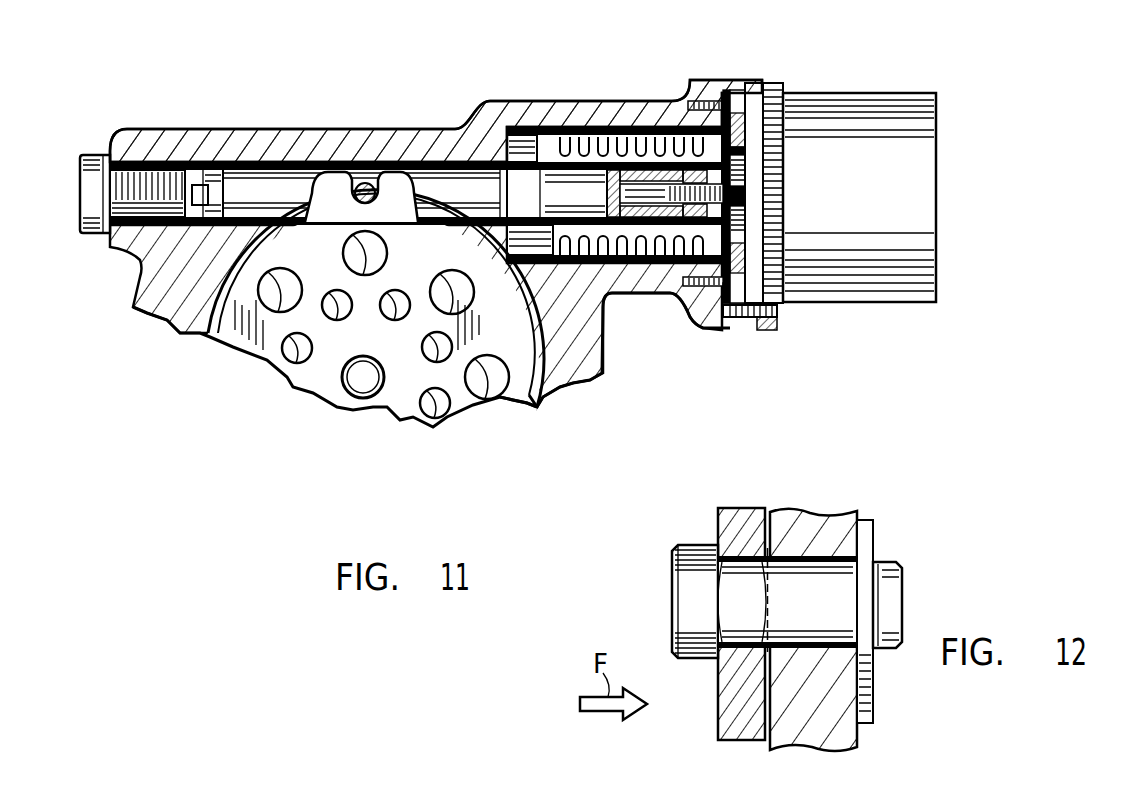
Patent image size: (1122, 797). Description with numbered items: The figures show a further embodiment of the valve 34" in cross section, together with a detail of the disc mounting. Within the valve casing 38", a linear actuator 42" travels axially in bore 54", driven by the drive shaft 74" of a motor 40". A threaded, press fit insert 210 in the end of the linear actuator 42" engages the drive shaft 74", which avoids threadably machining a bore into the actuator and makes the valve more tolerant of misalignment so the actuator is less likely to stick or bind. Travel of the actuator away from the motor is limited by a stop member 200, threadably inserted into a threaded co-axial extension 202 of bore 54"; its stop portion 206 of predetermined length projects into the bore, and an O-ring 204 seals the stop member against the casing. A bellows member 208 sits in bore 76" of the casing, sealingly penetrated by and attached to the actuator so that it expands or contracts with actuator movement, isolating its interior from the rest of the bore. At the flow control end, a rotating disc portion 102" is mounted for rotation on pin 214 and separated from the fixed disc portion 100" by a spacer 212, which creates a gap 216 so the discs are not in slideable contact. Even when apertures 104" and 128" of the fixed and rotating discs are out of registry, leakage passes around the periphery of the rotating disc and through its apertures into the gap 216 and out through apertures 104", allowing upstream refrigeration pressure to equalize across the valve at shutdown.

In FIG. 11, the valve 34 is at (464, 104).
In FIG. 11, the valve casing 38 is at (357, 129).
In FIG. 11, the motor 40 is at (886, 211).
In FIG. 11, the linear actuator 42 is at (274, 178).
In FIG. 11, the bore 54 is at (217, 162).
In FIG. 11, the drive shaft 74 is at (750, 190).
In FIG. 11, the bore 76 is at (513, 127).
In FIG. 11, the fixed disc portion 100 is at (540, 363).
In FIG. 12, the fixed disc portion 100 is at (840, 733).
In FIG. 11, the rotating disc portion 102 is at (274, 361).
In FIG. 12, the rotating disc portion 102 is at (727, 723).
In FIG. 11, the apertures 104 is at (482, 375).
In FIG. 11, the apertures 128 is at (508, 400).
In FIG. 11, the stop member 200 is at (143, 170).
In FIG. 11, the threaded co-axial extension 202 is at (112, 249).
In FIG. 11, the O-ring 204 is at (108, 157).
In FIG. 11, the stop portion 206 is at (171, 319).
In FIG. 11, the bellows member 208 is at (572, 127).
In FIG. 11, the threaded insert 210 is at (675, 101).
In FIG. 12, the spacer 212 is at (767, 545).
In FIG. 11, the pin 214 is at (338, 411).
In FIG. 12, the pin 214 is at (830, 610).
In FIG. 12, the gap 216 is at (765, 740).